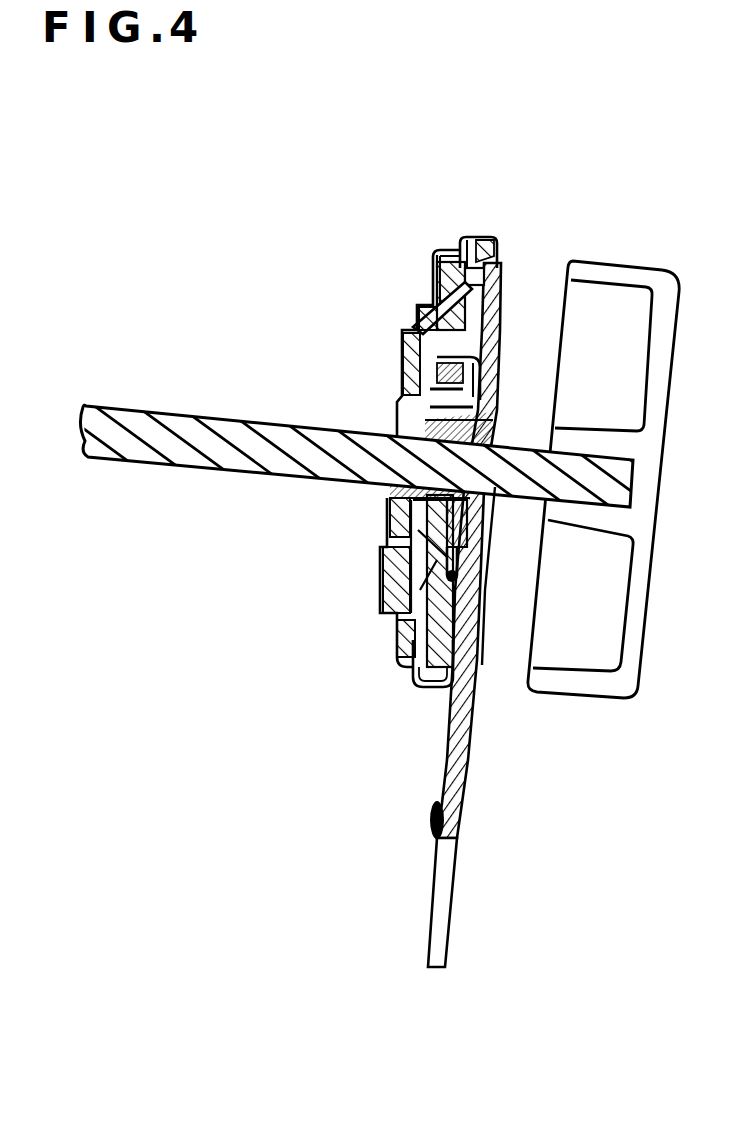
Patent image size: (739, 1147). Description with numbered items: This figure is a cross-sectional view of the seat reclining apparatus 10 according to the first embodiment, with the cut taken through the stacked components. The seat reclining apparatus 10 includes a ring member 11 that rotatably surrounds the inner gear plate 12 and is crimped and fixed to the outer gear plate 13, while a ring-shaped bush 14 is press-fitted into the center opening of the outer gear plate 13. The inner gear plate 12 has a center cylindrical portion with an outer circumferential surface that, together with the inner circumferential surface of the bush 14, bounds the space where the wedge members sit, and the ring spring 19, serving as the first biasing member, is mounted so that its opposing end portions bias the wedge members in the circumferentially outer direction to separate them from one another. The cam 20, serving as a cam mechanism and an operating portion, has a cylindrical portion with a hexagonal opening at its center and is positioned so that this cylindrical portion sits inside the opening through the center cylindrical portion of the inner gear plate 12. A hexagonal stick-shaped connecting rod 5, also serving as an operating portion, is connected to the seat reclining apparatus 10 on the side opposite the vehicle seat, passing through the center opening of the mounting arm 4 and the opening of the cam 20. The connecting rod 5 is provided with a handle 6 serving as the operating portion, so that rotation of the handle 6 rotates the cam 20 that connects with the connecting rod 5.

The mounting arm 4 is at (443, 898).
The connecting rod 5 is at (213, 447).
The handle 6 is at (588, 700).
The seat reclining apparatus 10 is at (484, 180).
The ring member 11 is at (468, 237).
The inner gear plate 12 is at (423, 308).
The outer gear plate 13 is at (410, 668).
The bush 14 is at (400, 337).
The ring spring 19 is at (425, 378).
The cam 20 is at (428, 518).